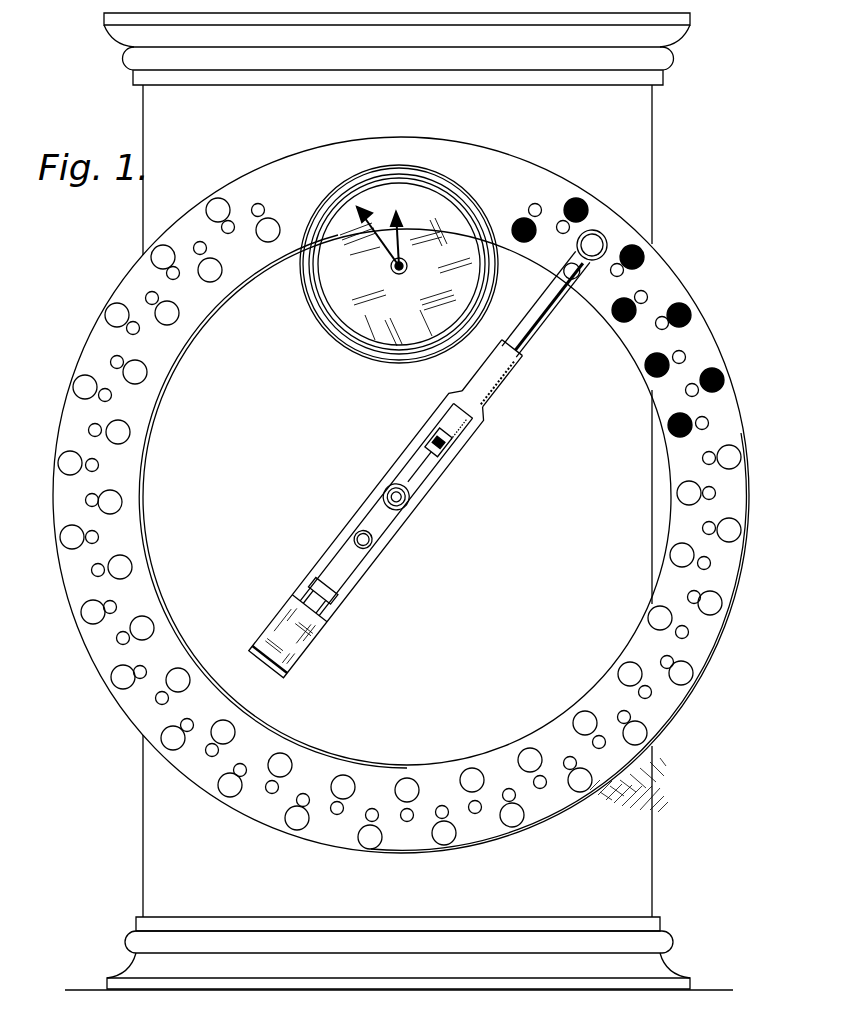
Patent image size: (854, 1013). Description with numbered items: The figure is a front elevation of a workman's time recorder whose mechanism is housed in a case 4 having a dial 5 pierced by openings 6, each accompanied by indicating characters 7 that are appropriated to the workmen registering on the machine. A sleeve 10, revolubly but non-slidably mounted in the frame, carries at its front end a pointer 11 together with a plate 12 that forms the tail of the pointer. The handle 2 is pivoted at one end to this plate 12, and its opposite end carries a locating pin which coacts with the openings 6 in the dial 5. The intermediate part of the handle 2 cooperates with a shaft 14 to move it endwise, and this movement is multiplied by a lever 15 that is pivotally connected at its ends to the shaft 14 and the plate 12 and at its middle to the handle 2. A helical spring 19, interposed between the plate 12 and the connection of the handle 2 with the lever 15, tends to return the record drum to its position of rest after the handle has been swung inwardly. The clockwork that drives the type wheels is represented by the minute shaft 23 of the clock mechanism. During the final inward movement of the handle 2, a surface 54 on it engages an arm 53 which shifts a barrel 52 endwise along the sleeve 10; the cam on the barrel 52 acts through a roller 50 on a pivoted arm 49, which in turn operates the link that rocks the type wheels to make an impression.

The handle 2 is at (503, 379).
The case 4 is at (126, 849).
The dial 5 is at (700, 644).
The openings 6 is at (176, 266).
The indicating characters 7 is at (715, 372).
The sleeve 10 is at (428, 482).
The pointer 11 is at (598, 232).
The plate 12 is at (302, 641).
The shaft 14 is at (412, 506).
The lever 15 is at (360, 504).
The helical spring 19 is at (344, 545).
The minute shaft 23 is at (397, 274).
The arm 49 is at (218, 210).
The roller 50 is at (268, 230).
The barrel 52 is at (406, 472).
The arm 53 is at (432, 442).
The surface 54 is at (464, 432).